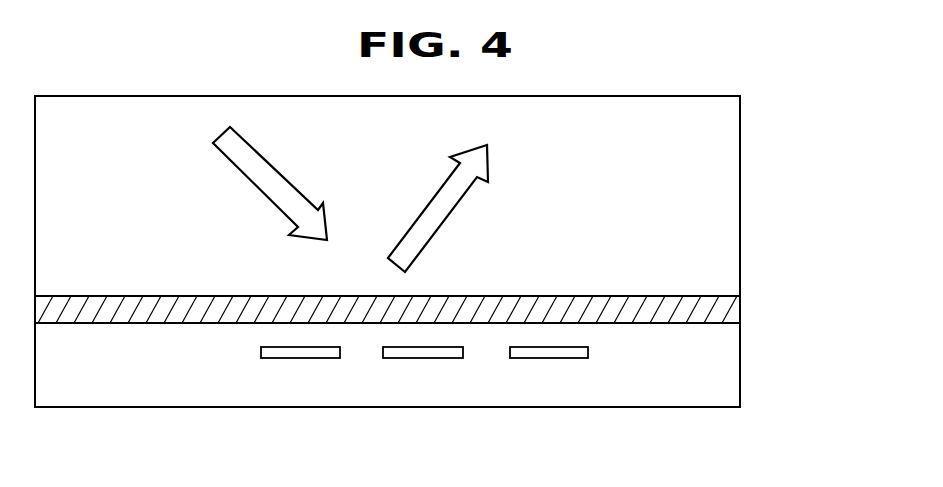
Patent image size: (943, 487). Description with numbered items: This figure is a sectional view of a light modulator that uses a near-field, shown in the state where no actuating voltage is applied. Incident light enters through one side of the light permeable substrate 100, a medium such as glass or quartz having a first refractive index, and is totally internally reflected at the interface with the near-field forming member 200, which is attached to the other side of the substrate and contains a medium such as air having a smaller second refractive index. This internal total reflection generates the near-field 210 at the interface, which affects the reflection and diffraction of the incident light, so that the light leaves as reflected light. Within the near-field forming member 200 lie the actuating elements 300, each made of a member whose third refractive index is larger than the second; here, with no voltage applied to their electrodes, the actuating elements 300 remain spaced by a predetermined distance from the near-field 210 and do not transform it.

The light permeable substrate 100 is at (728, 204).
The near-field 210 is at (730, 312).
The near-field forming member 200 is at (728, 365).
The actuating elements 300 is at (545, 352).